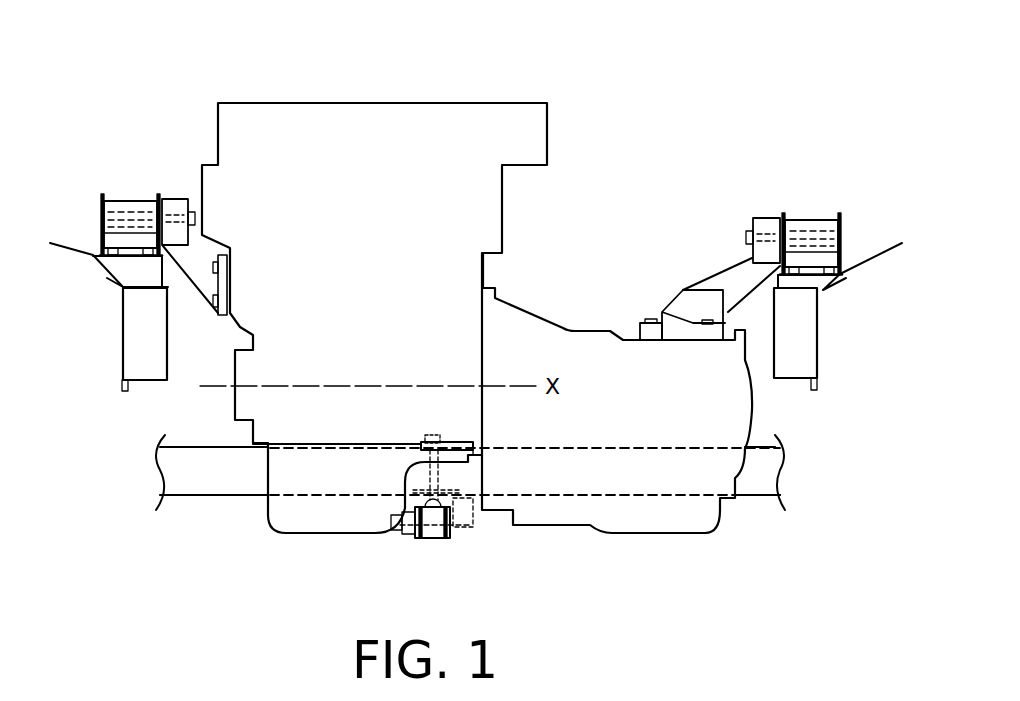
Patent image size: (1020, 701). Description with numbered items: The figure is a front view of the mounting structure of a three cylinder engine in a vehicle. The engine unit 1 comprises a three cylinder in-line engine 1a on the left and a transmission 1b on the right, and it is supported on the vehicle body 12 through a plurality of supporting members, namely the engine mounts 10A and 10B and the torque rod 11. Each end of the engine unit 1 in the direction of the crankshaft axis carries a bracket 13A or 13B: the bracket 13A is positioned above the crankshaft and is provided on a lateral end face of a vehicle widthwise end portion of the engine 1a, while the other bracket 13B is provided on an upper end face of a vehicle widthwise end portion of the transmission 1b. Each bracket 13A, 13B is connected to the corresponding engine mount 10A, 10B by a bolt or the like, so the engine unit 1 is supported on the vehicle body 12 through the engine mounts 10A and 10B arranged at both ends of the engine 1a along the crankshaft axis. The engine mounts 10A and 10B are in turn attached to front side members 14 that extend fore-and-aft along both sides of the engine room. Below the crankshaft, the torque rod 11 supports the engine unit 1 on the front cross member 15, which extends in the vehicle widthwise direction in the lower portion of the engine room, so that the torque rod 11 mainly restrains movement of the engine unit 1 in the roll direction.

The engine unit 1 is at (310, 99).
The three cylinder in-line engine 1a is at (342, 535).
The transmission 1b is at (630, 535).
The engine mount 10A is at (128, 190).
The engine mount 10B is at (813, 206).
The torque rod 11 is at (447, 545).
The vehicle body 12 is at (60, 238).
The bracket 13A is at (177, 193).
The bracket 13B is at (725, 273).
The front side member 14 is at (137, 391).
The front cross member 15 is at (215, 493).